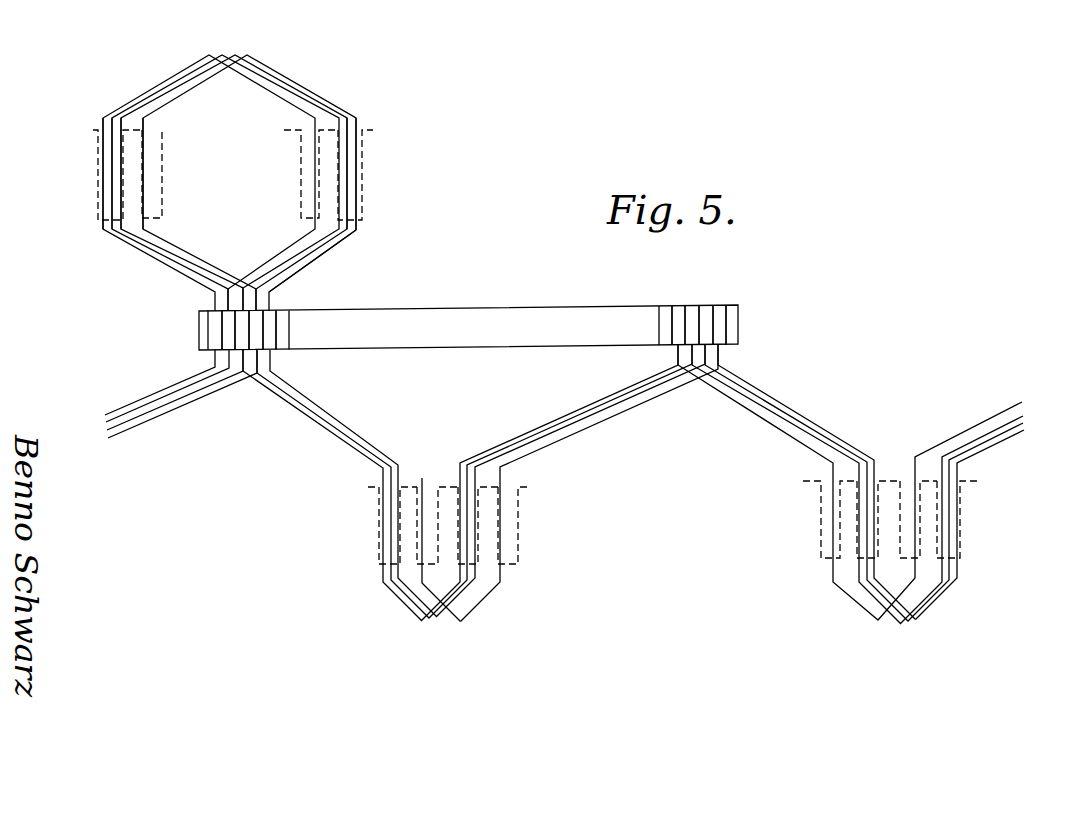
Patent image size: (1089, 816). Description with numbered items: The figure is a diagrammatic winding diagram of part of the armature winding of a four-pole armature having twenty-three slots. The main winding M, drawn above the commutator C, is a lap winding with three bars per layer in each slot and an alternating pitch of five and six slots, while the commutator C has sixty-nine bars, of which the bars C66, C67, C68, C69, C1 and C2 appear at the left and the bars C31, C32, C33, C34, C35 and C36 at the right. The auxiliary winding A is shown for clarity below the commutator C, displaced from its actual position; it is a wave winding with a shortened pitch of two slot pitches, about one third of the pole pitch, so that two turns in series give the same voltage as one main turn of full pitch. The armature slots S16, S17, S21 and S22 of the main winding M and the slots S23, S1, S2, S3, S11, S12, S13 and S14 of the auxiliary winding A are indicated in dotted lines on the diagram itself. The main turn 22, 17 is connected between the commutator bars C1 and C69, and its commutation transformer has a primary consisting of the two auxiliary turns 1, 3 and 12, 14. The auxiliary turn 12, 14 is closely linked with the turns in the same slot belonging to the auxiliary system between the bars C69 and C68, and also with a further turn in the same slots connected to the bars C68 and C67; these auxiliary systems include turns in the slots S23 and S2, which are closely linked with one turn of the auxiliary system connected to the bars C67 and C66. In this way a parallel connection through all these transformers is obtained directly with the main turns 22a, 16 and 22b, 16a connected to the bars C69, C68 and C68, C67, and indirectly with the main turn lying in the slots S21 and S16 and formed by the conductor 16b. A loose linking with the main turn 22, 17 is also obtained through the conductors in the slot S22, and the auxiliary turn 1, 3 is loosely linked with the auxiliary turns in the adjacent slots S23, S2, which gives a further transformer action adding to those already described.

The main winding M is at (229, 183).
The armature slot S16 is at (100, 129).
The slot S17 is at (157, 133).
The armature slot S21 is at (305, 128).
The armature slot S22 is at (363, 128).
The main turn conductor 16 is at (123, 223).
The main turn conductor 16a is at (113, 207).
The main turn conductor 16b is at (103, 179).
The main turn conductor 17 is at (152, 222).
The main turn conductor 22 is at (362, 202).
The main turn conductor 22a is at (343, 220).
The main turn conductor 22b is at (355, 232).
The commutator C is at (468, 327).
The commutator bar C66 is at (213, 313).
The commutator bar C67 is at (227, 320).
The commutator bar C68 is at (238, 335).
The commutator bar C69 is at (257, 320).
The commutator bar C1 is at (278, 322).
The commutator segment C2 is at (285, 338).
The commutator segment C31 is at (663, 318).
The commutator segment C32 is at (680, 338).
The commutator segment C33 is at (689, 312).
The commutator segment C34 is at (707, 312).
The commutator segment C35 is at (717, 320).
The commutator segment C36 is at (735, 327).
The auxiliary turn conductor 1 is at (422, 478).
The auxiliary turn conductor 3 is at (502, 478).
The slot S1 is at (430, 490).
The armature slot S2 is at (477, 562).
The slot S3 is at (513, 527).
The armature slot S23 is at (379, 500).
The auxiliary winding A is at (849, 484).
The auxiliary turn conductor 12 is at (874, 463).
The auxiliary turn conductor 14 is at (960, 473).
The slot S11 is at (821, 496).
The slot S12 is at (855, 558).
The slot S13 is at (906, 483).
The slot S14 is at (960, 529).